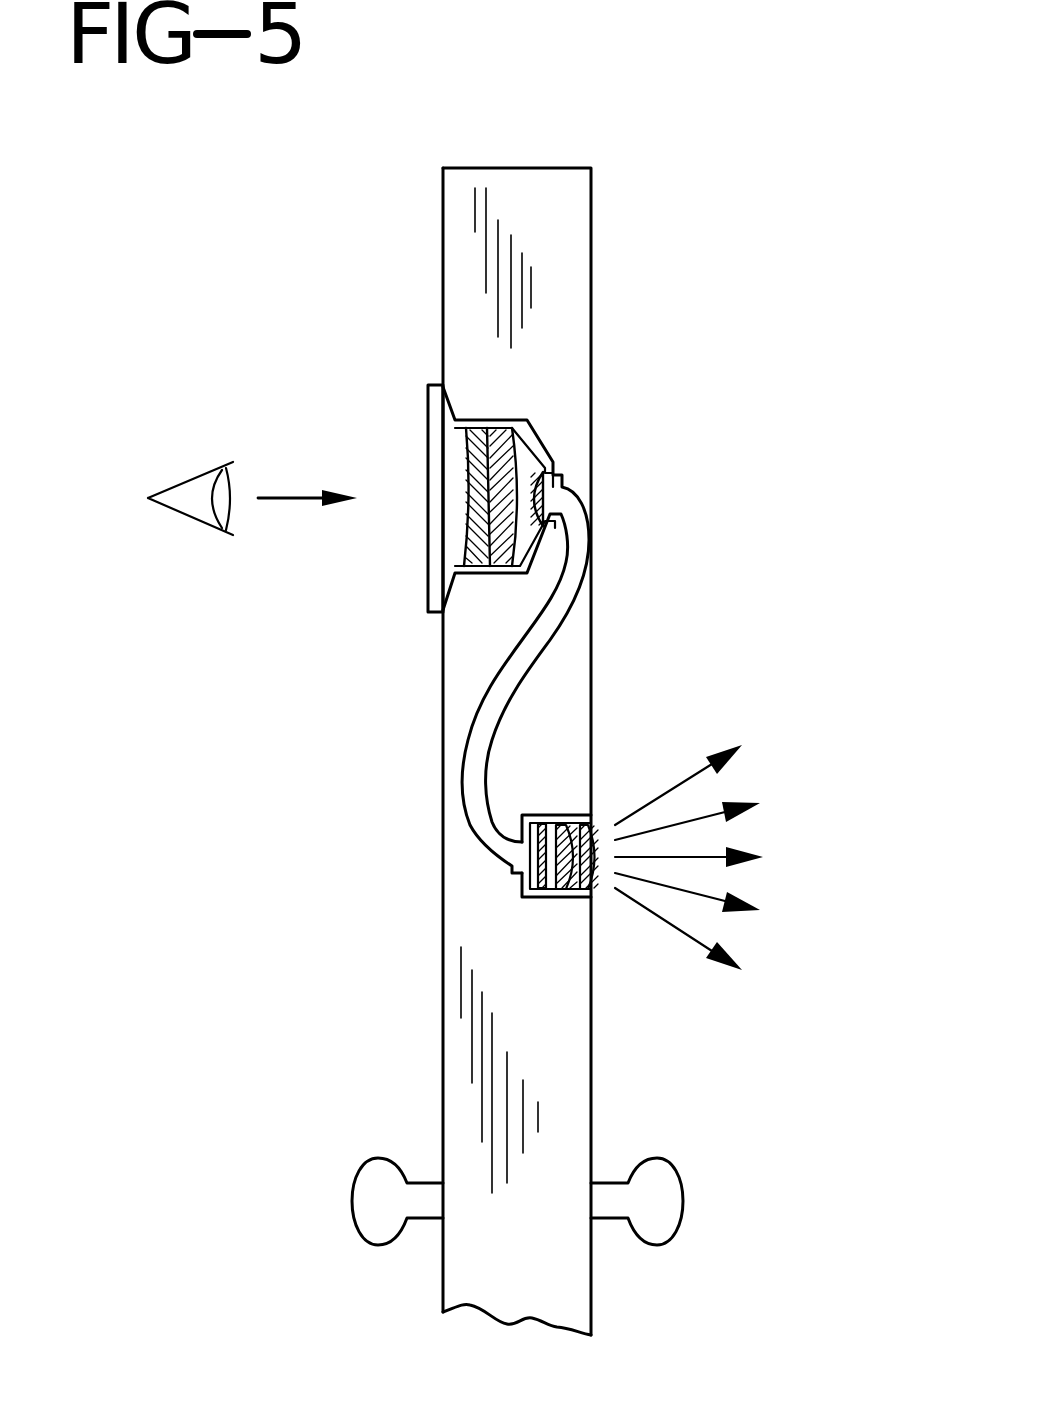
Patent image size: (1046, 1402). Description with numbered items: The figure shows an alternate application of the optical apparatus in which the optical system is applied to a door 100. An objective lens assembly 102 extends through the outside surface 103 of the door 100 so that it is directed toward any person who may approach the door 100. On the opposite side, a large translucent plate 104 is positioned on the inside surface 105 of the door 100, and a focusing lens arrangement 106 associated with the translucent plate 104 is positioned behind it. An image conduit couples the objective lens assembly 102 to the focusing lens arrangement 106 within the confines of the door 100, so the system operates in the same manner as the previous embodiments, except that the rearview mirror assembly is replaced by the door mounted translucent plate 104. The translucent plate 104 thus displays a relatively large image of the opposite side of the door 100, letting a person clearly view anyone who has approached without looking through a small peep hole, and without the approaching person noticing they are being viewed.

The door 100 is at (652, 229).
The objective lens assembly 102 is at (566, 786).
The outside surface 103 is at (592, 1055).
The translucent plate 104 is at (472, 442).
The inside surface 105 is at (443, 703).
The focusing lens arrangement 106 is at (498, 442).